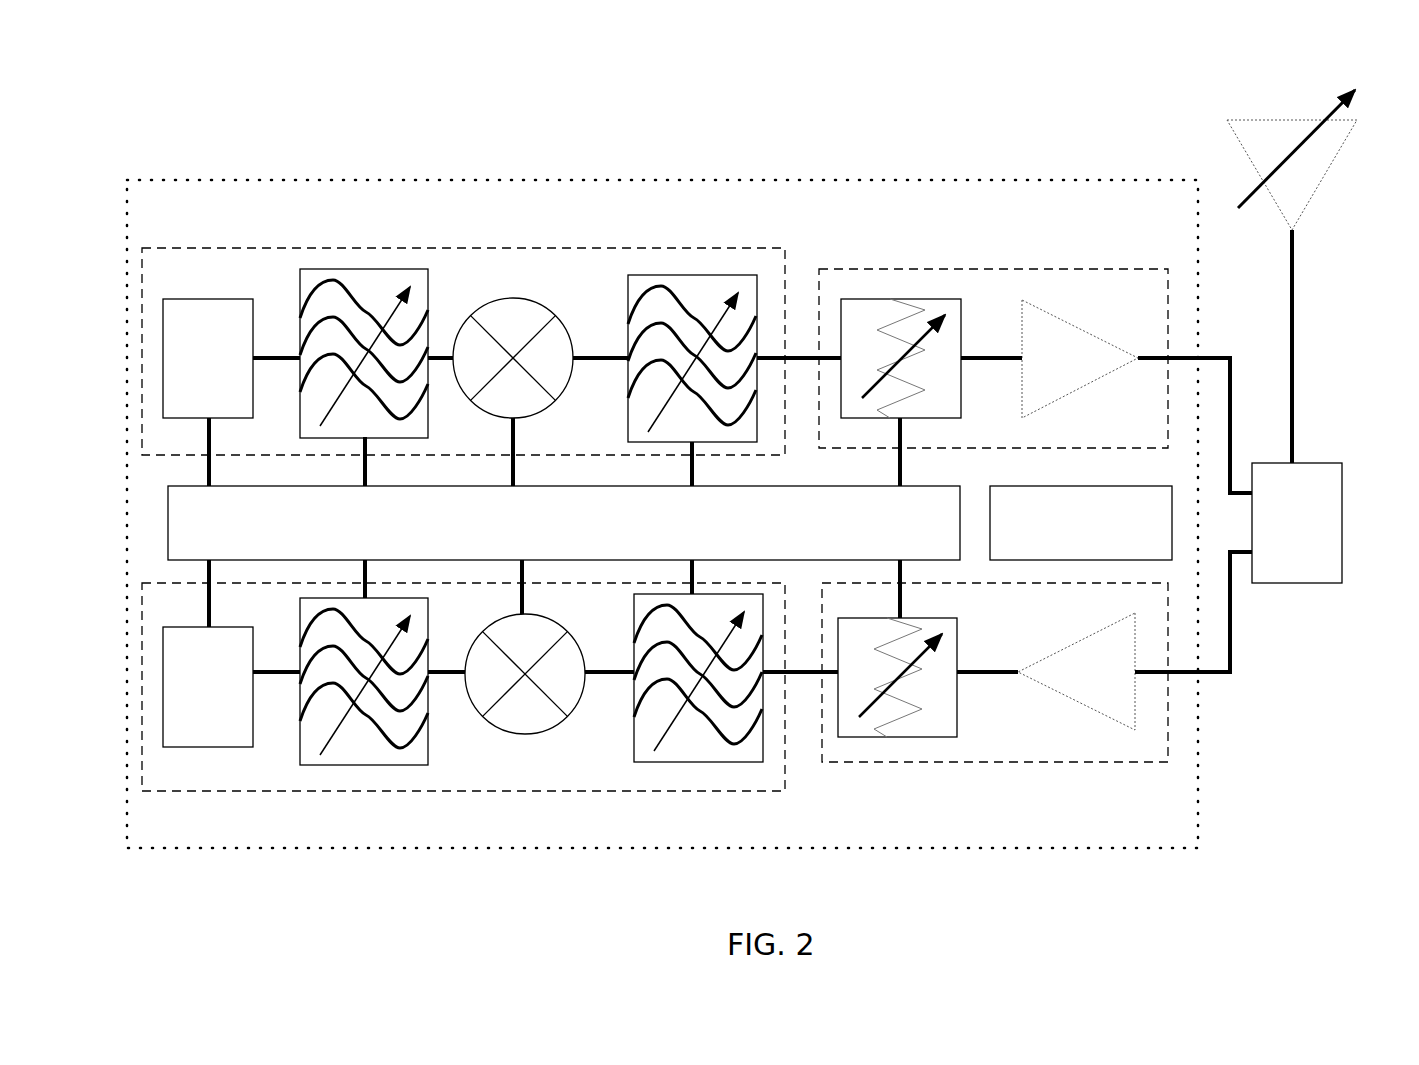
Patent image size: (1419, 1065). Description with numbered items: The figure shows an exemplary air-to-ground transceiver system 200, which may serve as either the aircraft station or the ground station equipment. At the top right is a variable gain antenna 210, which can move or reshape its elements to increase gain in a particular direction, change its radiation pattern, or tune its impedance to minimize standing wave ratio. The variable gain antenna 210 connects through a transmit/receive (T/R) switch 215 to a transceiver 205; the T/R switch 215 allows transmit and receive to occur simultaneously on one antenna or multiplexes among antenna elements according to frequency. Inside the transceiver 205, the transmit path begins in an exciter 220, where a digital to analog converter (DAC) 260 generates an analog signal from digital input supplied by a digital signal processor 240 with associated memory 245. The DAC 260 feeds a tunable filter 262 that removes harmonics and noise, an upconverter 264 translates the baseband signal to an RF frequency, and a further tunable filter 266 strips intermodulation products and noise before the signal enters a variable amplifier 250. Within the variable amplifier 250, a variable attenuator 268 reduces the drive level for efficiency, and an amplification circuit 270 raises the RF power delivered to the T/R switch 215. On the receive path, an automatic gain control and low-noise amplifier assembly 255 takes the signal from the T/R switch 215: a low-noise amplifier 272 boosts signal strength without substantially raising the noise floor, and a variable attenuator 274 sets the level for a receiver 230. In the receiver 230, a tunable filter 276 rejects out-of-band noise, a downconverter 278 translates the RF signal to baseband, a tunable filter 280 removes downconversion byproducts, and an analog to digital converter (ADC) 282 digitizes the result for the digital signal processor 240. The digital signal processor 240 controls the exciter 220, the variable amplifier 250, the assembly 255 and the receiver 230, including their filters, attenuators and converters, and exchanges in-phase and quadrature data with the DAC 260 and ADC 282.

The air-to-ground transceiver system 200 is at (762, 482).
The transceiver 205 is at (505, 180).
The variable gain antenna 210 is at (1315, 192).
The transmit/receive (T/R) switch 215 is at (1342, 463).
The exciter 220 is at (582, 248).
The receiver 230 is at (423, 791).
The digital signal processor 240 is at (564, 523).
The memory 245 is at (1081, 523).
The variable amplifier 250 is at (1017, 269).
The automatic gain control (AGC) and low-noise amplifier (LNA) assembly 255 is at (1035, 762).
The digital to analog converter (DAC) 260 is at (217, 299).
The tunable filter 262 is at (370, 269).
The upconverter 264 is at (540, 298).
The tunable filter 266 is at (728, 275).
The variable attenuator 268 is at (892, 299).
The amplification circuit 270 is at (1115, 343).
The low-noise amplifier 272 is at (1135, 730).
The variable attenuator 274 is at (908, 737).
The tunable filter 276 is at (697, 762).
The downconverter 278 is at (550, 733).
The tunable filter 280 is at (335, 765).
The analog to digital converter (ADC) 282 is at (210, 747).